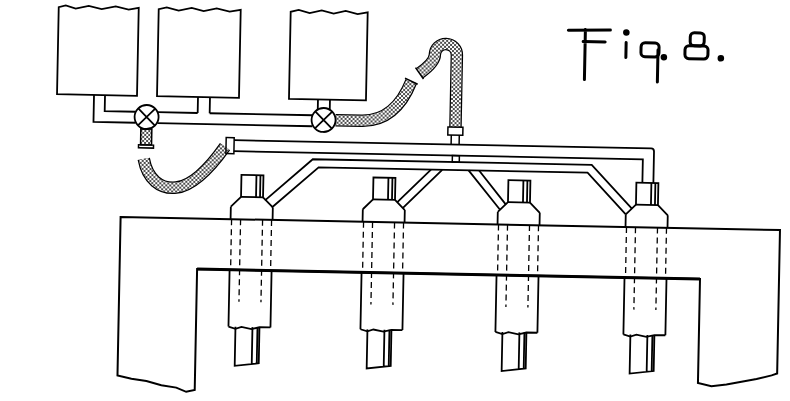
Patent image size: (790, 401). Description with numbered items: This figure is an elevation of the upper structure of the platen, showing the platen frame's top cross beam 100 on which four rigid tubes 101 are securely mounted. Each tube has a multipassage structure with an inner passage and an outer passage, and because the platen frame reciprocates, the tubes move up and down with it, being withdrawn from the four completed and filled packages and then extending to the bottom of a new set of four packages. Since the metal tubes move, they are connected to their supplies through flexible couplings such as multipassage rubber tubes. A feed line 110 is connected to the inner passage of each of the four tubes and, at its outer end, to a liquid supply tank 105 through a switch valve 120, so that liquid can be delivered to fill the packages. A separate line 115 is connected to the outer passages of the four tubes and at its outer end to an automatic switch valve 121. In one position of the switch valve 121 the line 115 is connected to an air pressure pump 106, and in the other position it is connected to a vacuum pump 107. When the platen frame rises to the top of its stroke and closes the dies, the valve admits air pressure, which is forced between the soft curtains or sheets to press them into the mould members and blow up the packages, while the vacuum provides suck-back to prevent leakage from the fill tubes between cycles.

The top cross beam 100 is at (130, 317).
The rigid tube 101 is at (273, 210).
The liquid supply tank 105 is at (64, 96).
The air pressure pump 106 is at (328, 60).
The vacuum pump 107 is at (199, 60).
The feed line 110 is at (141, 176).
The line 115 is at (459, 139).
The switch valve 120 is at (136, 131).
The automatic switch valve 121 is at (310, 117).